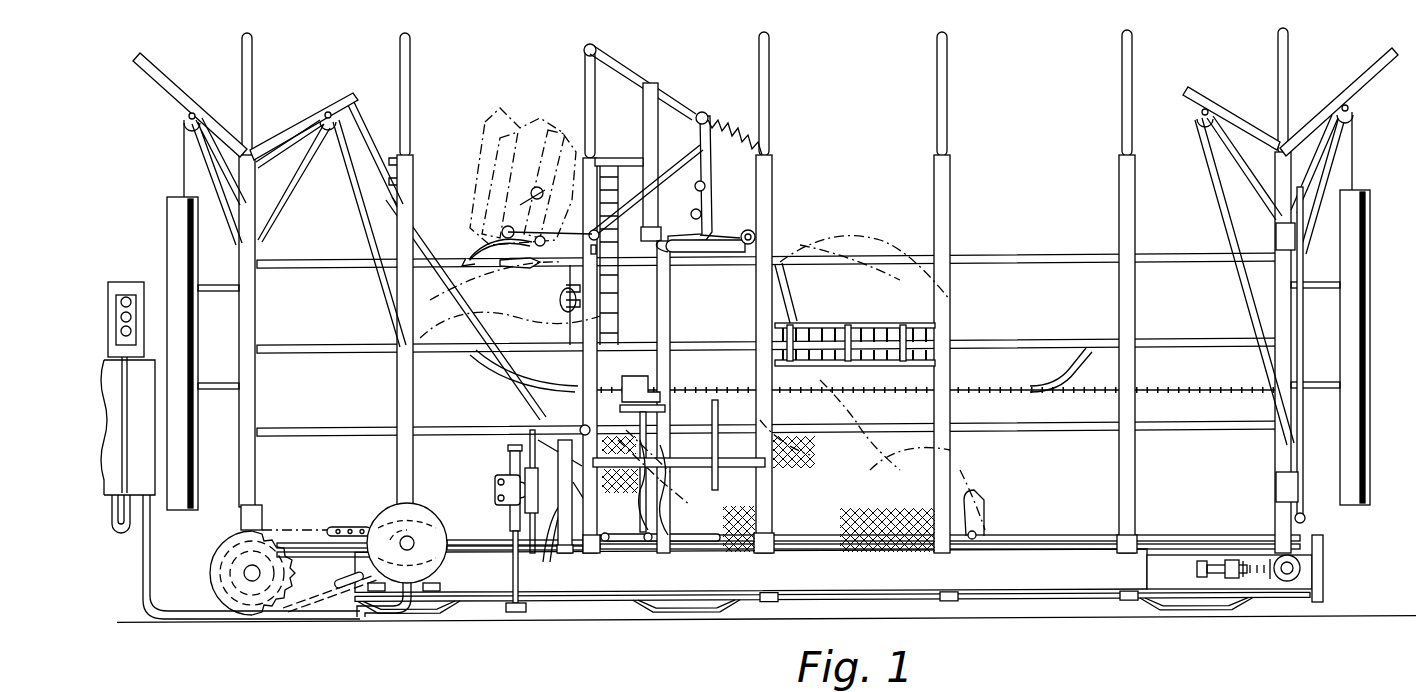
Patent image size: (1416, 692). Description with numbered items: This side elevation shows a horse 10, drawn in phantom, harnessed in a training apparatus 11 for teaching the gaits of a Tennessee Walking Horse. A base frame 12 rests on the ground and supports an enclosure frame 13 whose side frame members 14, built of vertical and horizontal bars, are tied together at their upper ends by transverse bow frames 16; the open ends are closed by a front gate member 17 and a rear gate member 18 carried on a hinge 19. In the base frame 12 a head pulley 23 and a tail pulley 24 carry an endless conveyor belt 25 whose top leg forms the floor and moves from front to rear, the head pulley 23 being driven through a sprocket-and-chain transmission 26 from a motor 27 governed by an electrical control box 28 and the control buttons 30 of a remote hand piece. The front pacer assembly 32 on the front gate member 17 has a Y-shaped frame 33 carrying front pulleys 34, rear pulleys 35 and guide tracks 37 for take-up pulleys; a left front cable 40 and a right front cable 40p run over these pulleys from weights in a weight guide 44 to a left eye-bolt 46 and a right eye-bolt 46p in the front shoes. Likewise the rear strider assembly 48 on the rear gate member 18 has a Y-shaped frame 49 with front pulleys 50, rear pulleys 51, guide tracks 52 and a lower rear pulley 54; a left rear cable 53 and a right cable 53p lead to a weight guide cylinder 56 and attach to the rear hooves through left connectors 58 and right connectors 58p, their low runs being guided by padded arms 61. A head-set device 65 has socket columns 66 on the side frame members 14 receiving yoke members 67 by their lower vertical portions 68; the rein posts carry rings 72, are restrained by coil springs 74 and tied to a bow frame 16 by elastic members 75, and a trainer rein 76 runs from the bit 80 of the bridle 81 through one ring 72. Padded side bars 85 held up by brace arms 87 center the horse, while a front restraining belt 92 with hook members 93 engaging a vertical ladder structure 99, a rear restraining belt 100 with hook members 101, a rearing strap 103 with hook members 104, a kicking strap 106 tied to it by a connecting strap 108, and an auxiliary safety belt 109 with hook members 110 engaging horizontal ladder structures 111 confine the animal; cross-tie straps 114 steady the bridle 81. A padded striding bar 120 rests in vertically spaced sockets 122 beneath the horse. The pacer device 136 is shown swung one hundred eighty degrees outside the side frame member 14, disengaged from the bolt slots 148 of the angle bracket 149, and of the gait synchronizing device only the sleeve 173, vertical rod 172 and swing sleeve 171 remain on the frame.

The horse 10 is at (822, 244).
The training apparatus 11 is at (1318, 40).
The base frame 12 is at (1040, 582).
The enclosure frame 13 is at (1140, 52).
The side frame member 14 is at (1119, 172).
The transverse bow frames 16 is at (937, 56).
The front gate member 17 is at (238, 328).
The rear gate member 18 is at (1298, 316).
The hinge 19 is at (1276, 236).
The head pulley 23 is at (278, 574).
The tail pulley 24 is at (1324, 570).
The endless conveyor belt 25 is at (476, 542).
The sprocket-and-chain transmission 26 is at (352, 525).
The motor 27 is at (392, 508).
The electrical control box 28 is at (150, 530).
The control buttons 30 is at (135, 333).
The front pacer assembly 32 is at (272, 104).
The Y-shaped frame 33 is at (165, 82).
The front pulleys 34 is at (192, 110).
The rear pulleys 35 is at (328, 112).
The guide tracks 37 is at (232, 232).
The left front cable 40 is at (365, 150).
The right front cable 40p is at (355, 198).
The vertical cylindrical weight guide 44 is at (170, 218).
The eye-bolt 46 is at (596, 548).
The eye-bolt 46p is at (395, 362).
The rear strider assembly 48 is at (1308, 96).
The Y-shaped frame 49 is at (1248, 135).
The front pulleys 50 is at (1206, 110).
The rear pulleys 51 is at (1355, 112).
The guide tracks 52 is at (1303, 252).
The left rear cable 53 is at (1216, 536).
The right cable 53p is at (818, 540).
The lower rear pulley 54 is at (1308, 520).
The weight guide cylinder 56 is at (1348, 460).
The connectors 58 is at (982, 512).
The connectors 58p is at (712, 545).
The padded arms 61 is at (1122, 520).
The head-set device 65 is at (705, 100).
The vertical socket columns 66 is at (672, 320).
The yoke member 67 is at (745, 246).
The lower vertical portion 68 is at (686, 254).
The rings 72 is at (698, 150).
The coil springs 74 is at (750, 140).
The elastic linear members 75 is at (605, 70).
The trainer rein 76 is at (708, 170).
The bit 80 is at (510, 266).
The bridle 81 is at (490, 182).
The padded side bars 85 is at (1056, 396).
The brace arm 87 is at (580, 428).
The front padded restraining belt 92 is at (558, 298).
The hook member 93 is at (610, 320).
The ladder structure 99 is at (548, 334).
The rear restraining belt 100 is at (885, 366).
The hook members 101 is at (852, 323).
The padded rearing strap 103 is at (700, 186).
The hook members 104 is at (542, 220).
The padded kicking strap 106 is at (762, 232).
The connecting strap 108 is at (715, 238).
The auxiliary rear safety belt 109 is at (915, 448).
The hook members 110 is at (900, 400).
The ladder attachment structures 111 is at (800, 323).
The cross-tie straps 114 is at (500, 252).
The padded striding bar 120 is at (624, 392).
The sockets 122 is at (668, 408).
The pacer device 136 is at (472, 492).
The bolt slots 148 is at (540, 548).
The vertical angle bracket 149 is at (566, 600).
The swing sleeve 171 is at (740, 390).
The journal shaft 172 is at (686, 500).
The sleeve 173 is at (718, 470).